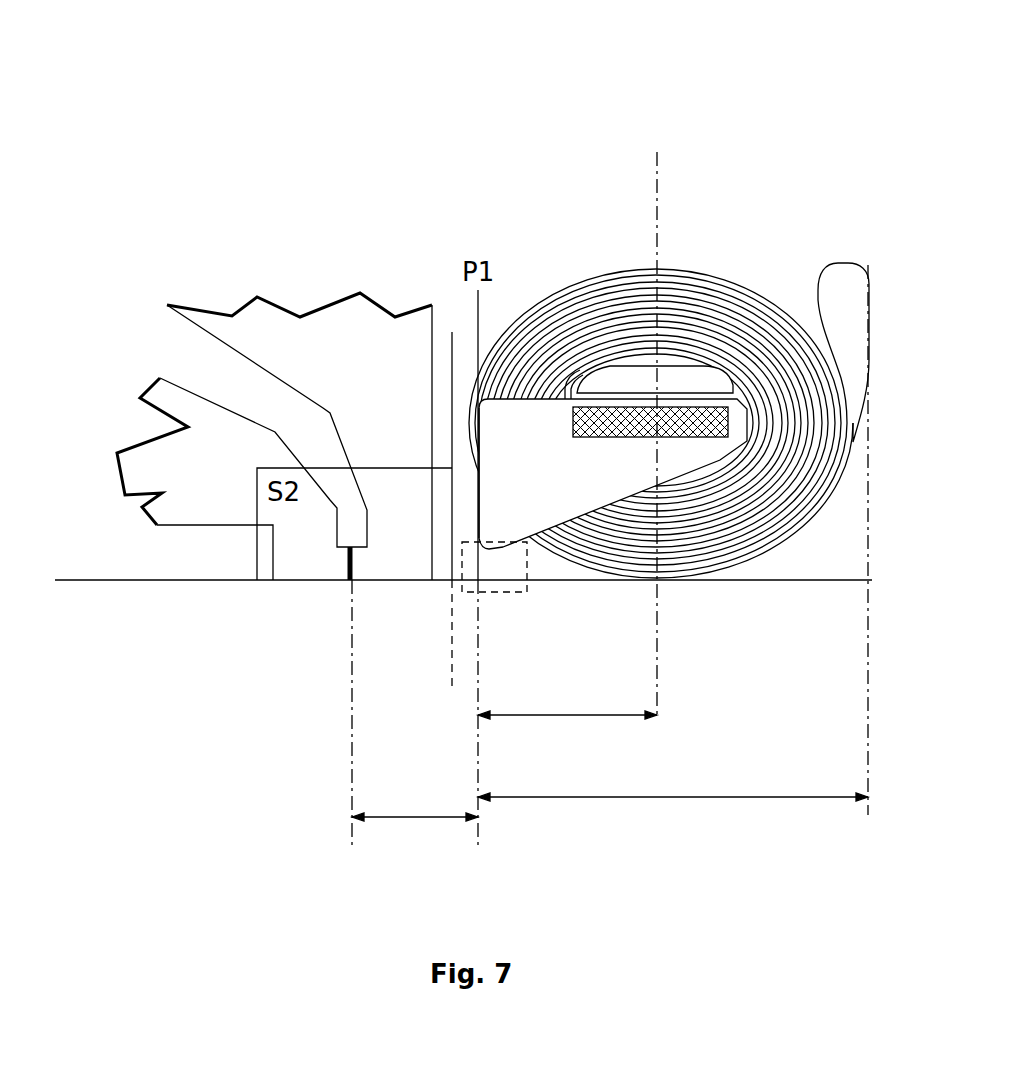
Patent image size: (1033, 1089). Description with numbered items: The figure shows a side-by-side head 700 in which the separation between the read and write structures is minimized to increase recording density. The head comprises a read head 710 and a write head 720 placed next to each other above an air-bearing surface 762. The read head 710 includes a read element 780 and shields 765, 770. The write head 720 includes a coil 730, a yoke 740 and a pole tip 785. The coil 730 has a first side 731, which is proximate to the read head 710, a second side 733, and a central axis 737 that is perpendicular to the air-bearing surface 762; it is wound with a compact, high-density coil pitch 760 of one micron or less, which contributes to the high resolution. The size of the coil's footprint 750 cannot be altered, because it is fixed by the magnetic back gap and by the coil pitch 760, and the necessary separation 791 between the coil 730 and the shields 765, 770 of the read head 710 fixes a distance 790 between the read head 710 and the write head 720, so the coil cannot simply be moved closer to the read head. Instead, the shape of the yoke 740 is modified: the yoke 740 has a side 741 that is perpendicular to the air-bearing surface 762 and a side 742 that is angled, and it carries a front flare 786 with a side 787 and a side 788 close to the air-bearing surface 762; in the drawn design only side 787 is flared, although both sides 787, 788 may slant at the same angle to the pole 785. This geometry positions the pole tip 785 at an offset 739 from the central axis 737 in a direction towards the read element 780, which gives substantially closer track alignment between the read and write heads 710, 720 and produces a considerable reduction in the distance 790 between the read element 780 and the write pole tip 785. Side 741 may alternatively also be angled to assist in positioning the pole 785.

The side-by-side head 700 is at (678, 70).
The read head 710 is at (295, 292).
The write head 720 is at (562, 260).
The coil 730 is at (740, 275).
The first side 731 is at (472, 415).
The second side 733 is at (852, 430).
The central axis 737 is at (658, 222).
The offset 739 is at (577, 717).
The yoke 740 is at (549, 445).
The side 741 is at (492, 503).
The side 742 is at (590, 494).
The footprint 750 is at (733, 800).
The coil pitch 760 is at (815, 507).
The air-bearing surface 762 is at (115, 580).
The shield 765 is at (424, 558).
The shield 770 is at (440, 333).
The read element 780 is at (347, 580).
The pole tip 785 is at (481, 575).
The front flare 786 is at (504, 594).
The side 787 is at (513, 557).
The side 788 is at (518, 572).
The distance 790 is at (433, 818).
The separation 791 is at (465, 685).